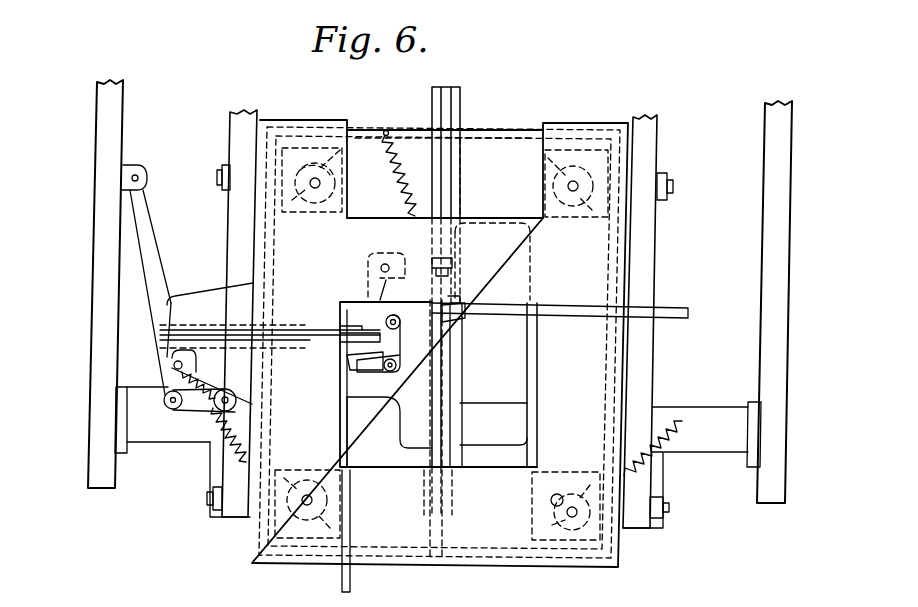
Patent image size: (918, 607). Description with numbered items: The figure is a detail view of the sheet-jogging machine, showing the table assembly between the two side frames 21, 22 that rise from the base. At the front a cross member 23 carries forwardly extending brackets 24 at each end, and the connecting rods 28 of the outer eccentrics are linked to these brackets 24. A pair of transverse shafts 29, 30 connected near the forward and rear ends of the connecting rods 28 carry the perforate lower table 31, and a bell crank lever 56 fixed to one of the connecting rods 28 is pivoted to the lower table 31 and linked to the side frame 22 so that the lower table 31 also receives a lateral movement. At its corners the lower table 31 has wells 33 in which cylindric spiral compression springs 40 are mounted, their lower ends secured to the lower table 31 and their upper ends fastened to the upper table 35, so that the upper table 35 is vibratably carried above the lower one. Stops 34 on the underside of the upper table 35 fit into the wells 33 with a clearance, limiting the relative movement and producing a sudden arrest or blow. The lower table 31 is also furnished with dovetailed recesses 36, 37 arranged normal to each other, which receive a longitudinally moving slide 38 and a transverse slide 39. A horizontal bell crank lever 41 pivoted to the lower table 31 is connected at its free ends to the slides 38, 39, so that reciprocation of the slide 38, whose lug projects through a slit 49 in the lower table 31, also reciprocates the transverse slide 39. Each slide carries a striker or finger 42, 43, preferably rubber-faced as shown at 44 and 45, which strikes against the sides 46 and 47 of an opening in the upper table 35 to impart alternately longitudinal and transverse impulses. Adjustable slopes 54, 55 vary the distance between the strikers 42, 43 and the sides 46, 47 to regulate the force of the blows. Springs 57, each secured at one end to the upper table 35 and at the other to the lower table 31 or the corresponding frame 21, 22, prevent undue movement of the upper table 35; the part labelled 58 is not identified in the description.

The side frame 21 is at (784, 270).
The side frame 22 is at (100, 205).
The cross member 23 is at (148, 443).
The bracket 24 is at (213, 520).
The connecting rod 28 is at (236, 510).
The transverse shaft 29 is at (207, 500).
The transverse shaft 30 is at (216, 178).
The lower table 31 is at (410, 128).
The well 33 is at (350, 148).
The stop 34 is at (300, 160).
The upper table 35 is at (272, 118).
The recess 36 is at (462, 163).
The recess 37 is at (238, 325).
The longitudinally moving slide 38 is at (462, 102).
The transverse slide 39 is at (162, 338).
The compression spring 40 is at (312, 200).
The bell crank lever 41 is at (366, 268).
The striker 42 is at (450, 353).
The striker 43 is at (378, 365).
The rubber face 44 is at (450, 300).
The rubber face 45 is at (347, 362).
The side of opening 46 is at (518, 298).
The side of opening 47 is at (396, 315).
The slit 49 is at (515, 260).
The adjustable slope 54 is at (460, 316).
The adjustable slope 55 is at (340, 386).
The bell crank lever 56 is at (186, 408).
The spring 57 is at (398, 182).
The small spring 58 is at (215, 362).